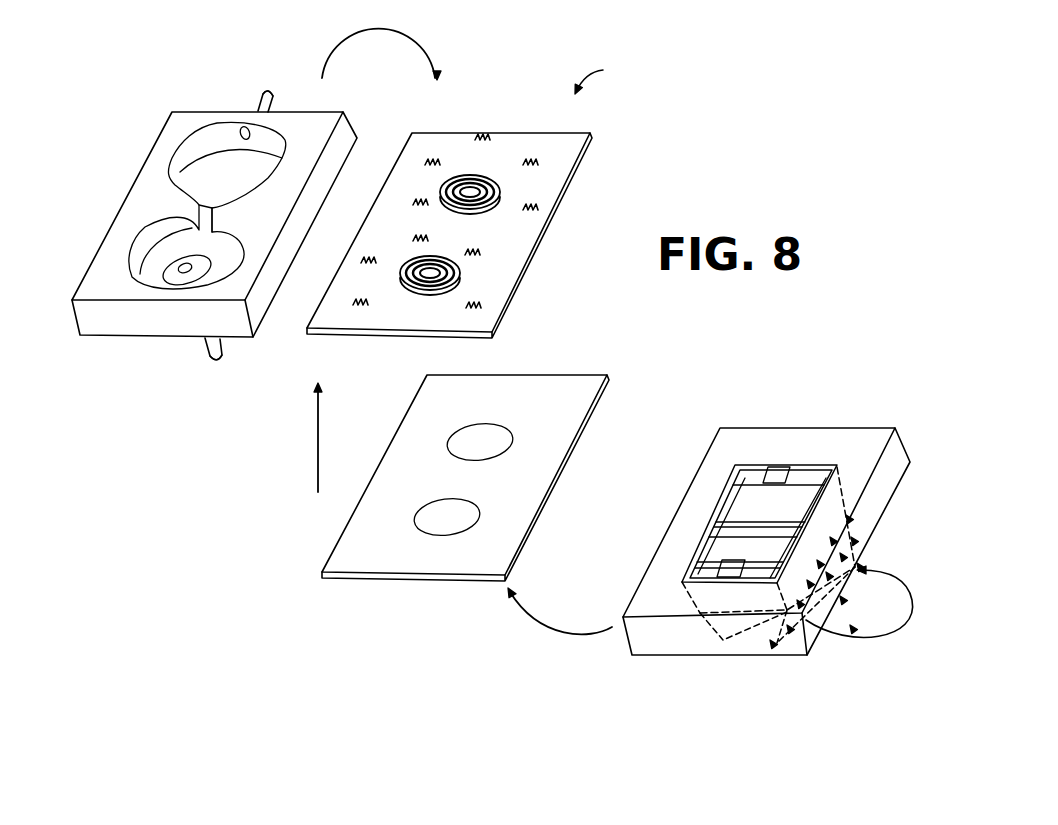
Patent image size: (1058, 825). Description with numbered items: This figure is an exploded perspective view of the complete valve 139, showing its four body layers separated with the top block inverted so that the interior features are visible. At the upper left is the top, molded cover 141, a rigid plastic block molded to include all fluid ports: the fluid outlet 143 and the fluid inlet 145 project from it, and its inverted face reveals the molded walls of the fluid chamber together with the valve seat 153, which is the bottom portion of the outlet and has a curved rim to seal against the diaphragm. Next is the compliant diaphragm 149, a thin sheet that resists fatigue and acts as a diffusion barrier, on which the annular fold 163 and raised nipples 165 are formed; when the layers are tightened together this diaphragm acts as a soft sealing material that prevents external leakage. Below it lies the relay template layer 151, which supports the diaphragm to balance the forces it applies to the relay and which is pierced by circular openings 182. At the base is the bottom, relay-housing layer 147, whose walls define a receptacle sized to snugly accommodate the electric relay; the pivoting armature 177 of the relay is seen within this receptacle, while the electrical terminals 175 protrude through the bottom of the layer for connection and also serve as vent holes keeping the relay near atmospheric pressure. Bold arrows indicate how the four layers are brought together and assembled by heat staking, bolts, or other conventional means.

The complete valve 139 is at (652, 77).
The top molded cover 141 is at (177, 118).
The fluid outlet 143 is at (203, 347).
The fluid inlet 145 is at (260, 93).
The bottom relay-housing layer 147 is at (882, 442).
The compliant diaphragm 149 is at (440, 137).
The relay template layer 151 is at (557, 432).
The valve seat 153 is at (178, 265).
The annular fold 163 is at (495, 182).
The raised nipples 165 is at (467, 175).
The electrical terminals 175 is at (801, 558).
The pivoting armature 177 is at (800, 510).
The circular openings 182 is at (460, 513).